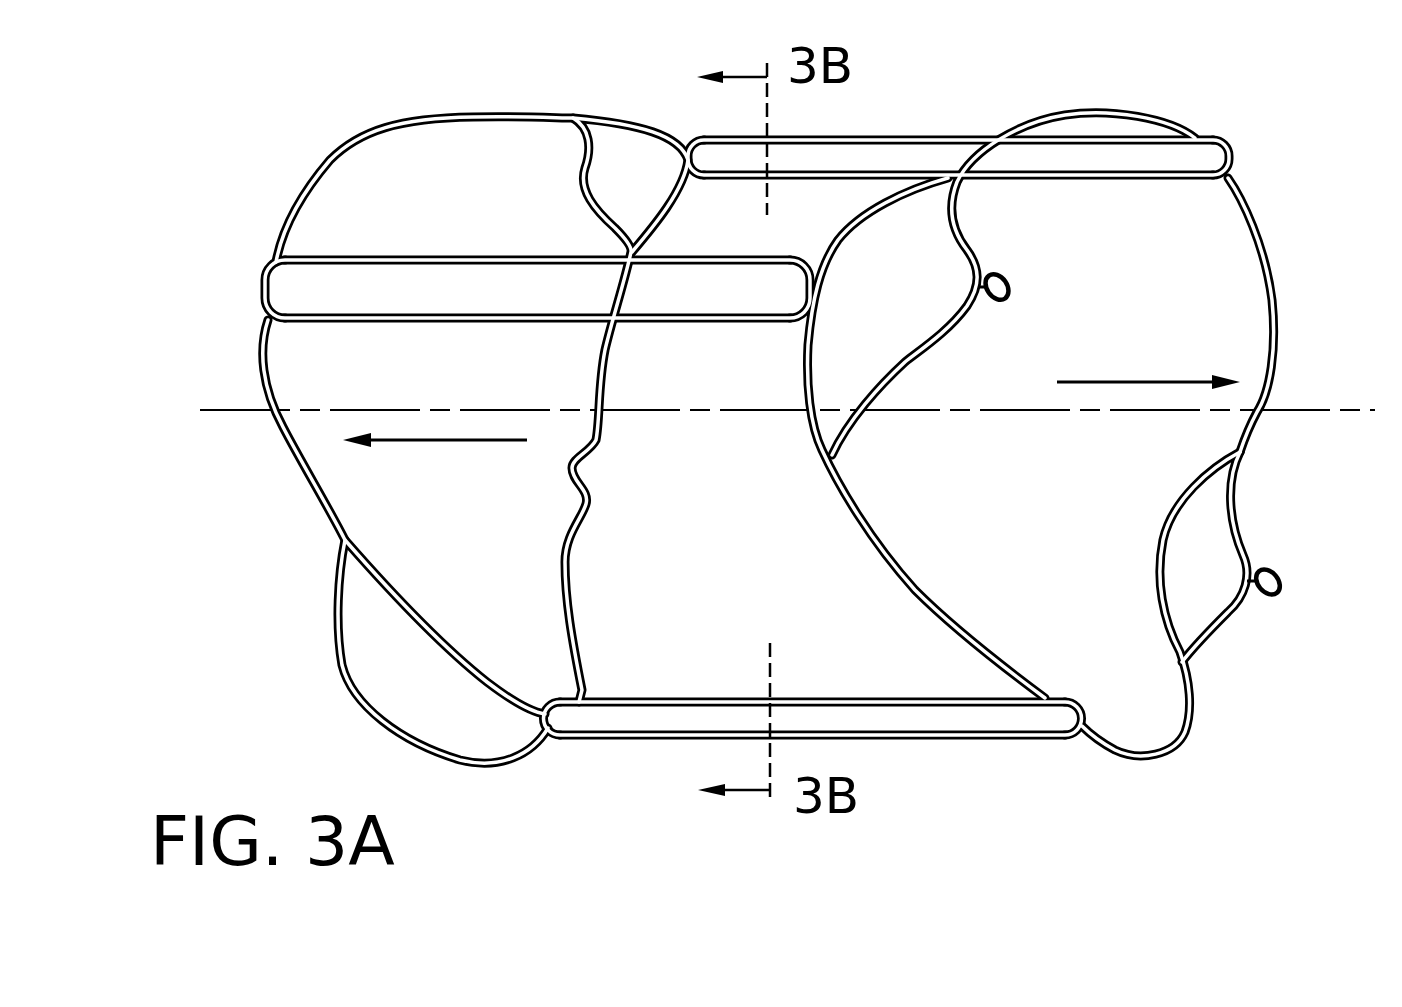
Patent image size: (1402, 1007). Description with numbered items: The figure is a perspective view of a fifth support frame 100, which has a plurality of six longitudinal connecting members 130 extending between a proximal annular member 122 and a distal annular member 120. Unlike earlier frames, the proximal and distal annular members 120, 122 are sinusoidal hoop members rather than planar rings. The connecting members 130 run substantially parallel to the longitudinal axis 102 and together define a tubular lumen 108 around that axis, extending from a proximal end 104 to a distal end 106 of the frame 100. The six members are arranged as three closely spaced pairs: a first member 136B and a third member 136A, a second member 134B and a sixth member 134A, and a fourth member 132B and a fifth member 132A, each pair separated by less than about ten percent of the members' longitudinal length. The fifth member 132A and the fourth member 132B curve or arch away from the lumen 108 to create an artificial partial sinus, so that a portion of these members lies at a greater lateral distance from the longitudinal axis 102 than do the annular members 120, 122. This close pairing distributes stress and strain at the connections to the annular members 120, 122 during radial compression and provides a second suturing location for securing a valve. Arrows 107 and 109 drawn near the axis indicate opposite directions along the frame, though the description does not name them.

The fifth support frame 100 is at (312, 660).
The longitudinal axis 102 is at (1313, 410).
The proximal end 104 is at (1220, 143).
The distal end 106 is at (272, 276).
The inflow direction 107 is at (427, 446).
The lumen 108 is at (1158, 675).
The outflow direction 109 is at (1125, 380).
The distal annular member 120 is at (300, 480).
The proximal annular member 122 is at (1108, 573).
The longitudinal connecting members 130 is at (625, 748).
The fifth member 132A is at (440, 256).
The fourth member 132B is at (430, 322).
The sixth member 134A is at (930, 138).
The second member 134B is at (858, 172).
The third member 136A is at (907, 706).
The first member 136B is at (967, 740).